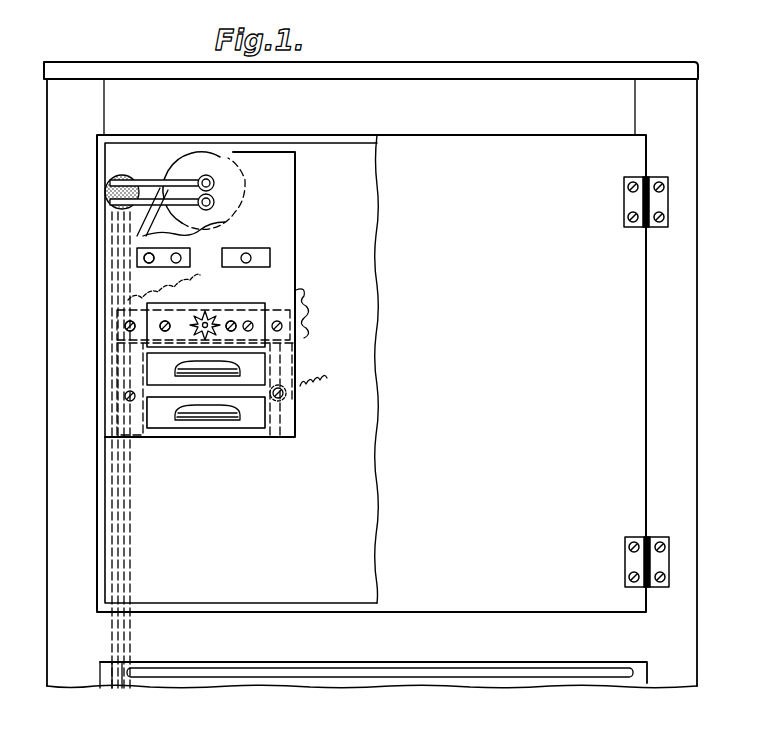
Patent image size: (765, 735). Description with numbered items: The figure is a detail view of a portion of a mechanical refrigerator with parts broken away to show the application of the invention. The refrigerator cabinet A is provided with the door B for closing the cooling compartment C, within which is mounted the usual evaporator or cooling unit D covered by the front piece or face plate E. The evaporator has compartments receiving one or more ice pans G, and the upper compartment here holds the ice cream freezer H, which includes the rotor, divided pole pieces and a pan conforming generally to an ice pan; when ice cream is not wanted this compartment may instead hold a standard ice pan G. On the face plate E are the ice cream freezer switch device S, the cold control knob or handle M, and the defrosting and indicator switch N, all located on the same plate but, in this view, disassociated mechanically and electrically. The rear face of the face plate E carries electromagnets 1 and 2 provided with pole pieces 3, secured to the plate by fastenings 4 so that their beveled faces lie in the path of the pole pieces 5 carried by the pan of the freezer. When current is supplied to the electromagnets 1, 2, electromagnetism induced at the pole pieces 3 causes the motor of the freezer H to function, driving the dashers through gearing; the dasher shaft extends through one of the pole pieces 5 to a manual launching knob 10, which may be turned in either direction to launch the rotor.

The refrigerator cabinet A is at (56, 431).
The door B is at (383, 373).
The cooling compartment C is at (212, 461).
The evaporator D is at (235, 177).
The face plate E is at (290, 236).
The ice cream freezer switch device S is at (246, 252).
The defrosting and indicator switch N is at (174, 256).
The cold control knob M is at (145, 259).
The ice cream freezer H is at (206, 311).
The manual launching knob 10 is at (250, 311).
The pole pieces 5 is at (182, 311).
The pole pieces 3 is at (298, 298).
The fastenings 4 is at (282, 392).
The electromagnet 1 is at (298, 392).
The ice pan G is at (247, 420).
The electromagnet 2 is at (148, 397).